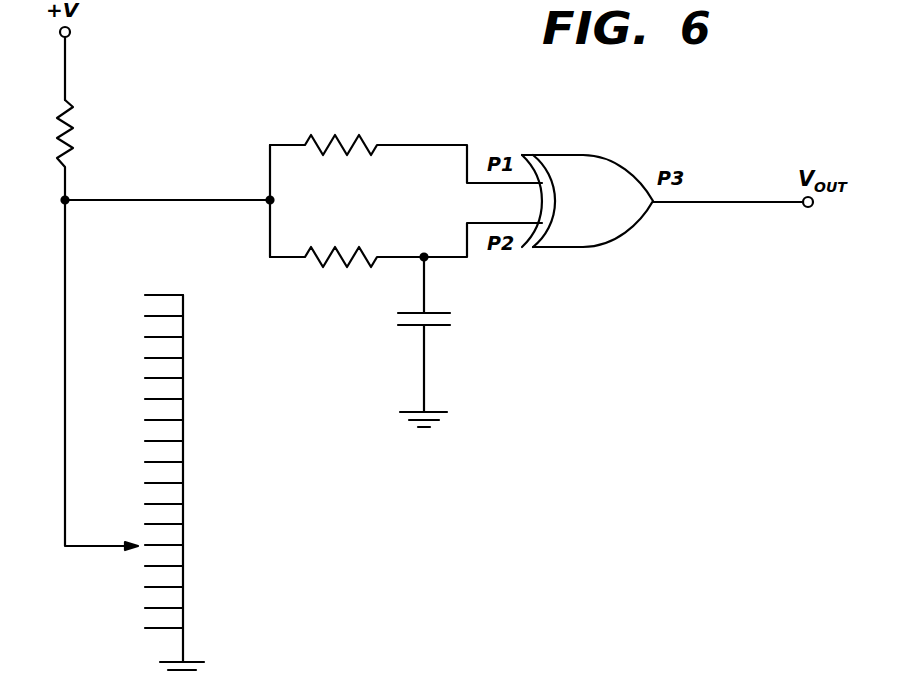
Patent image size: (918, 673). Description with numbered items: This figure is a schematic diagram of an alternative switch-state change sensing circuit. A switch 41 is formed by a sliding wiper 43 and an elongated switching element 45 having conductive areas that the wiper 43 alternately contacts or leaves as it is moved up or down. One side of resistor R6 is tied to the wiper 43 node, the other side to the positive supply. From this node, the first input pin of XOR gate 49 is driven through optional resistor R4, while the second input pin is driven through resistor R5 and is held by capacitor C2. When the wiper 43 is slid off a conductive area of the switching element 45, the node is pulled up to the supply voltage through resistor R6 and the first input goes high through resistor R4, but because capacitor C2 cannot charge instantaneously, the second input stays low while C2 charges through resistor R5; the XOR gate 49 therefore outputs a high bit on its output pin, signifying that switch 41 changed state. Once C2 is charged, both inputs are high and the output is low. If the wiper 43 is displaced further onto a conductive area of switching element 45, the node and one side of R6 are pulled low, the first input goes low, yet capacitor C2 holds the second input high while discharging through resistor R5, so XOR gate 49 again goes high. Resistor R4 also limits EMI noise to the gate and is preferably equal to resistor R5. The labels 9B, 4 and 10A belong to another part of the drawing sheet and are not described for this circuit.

The switch 41 is at (194, 451).
The wiper 43 is at (86, 546).
The switching element 45 is at (183, 428).
The XOR gate 49 is at (587, 201).
The element 9B is at (393, 672).
The element 4 is at (520, 672).
The element 10A is at (758, 665).
The resistor R4 is at (406, 145).
The resistor R5 is at (406, 243).
The resistor R6 is at (86, 150).
The capacitor C2 is at (444, 342).